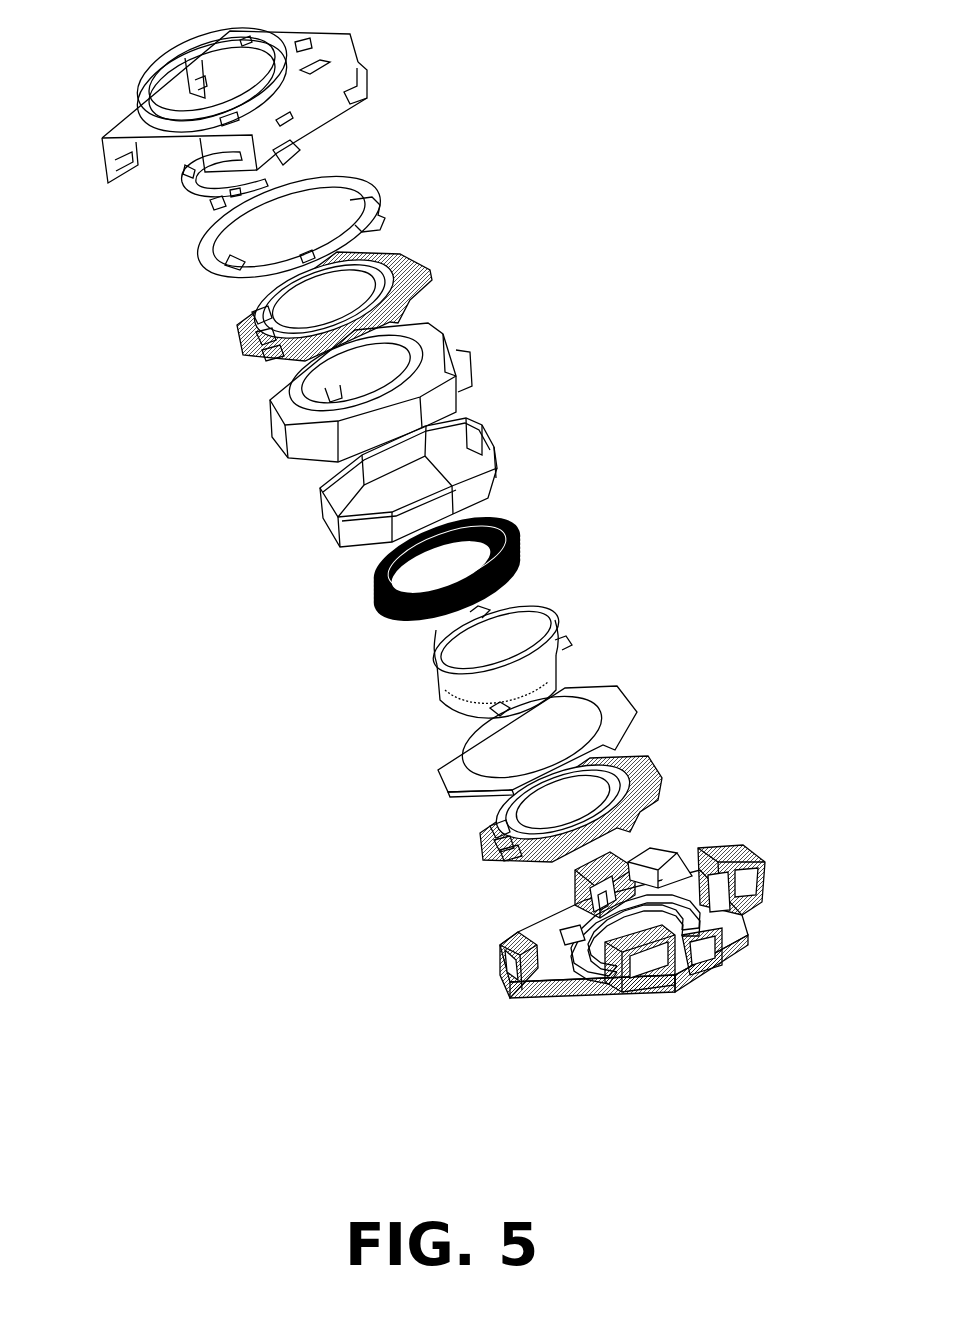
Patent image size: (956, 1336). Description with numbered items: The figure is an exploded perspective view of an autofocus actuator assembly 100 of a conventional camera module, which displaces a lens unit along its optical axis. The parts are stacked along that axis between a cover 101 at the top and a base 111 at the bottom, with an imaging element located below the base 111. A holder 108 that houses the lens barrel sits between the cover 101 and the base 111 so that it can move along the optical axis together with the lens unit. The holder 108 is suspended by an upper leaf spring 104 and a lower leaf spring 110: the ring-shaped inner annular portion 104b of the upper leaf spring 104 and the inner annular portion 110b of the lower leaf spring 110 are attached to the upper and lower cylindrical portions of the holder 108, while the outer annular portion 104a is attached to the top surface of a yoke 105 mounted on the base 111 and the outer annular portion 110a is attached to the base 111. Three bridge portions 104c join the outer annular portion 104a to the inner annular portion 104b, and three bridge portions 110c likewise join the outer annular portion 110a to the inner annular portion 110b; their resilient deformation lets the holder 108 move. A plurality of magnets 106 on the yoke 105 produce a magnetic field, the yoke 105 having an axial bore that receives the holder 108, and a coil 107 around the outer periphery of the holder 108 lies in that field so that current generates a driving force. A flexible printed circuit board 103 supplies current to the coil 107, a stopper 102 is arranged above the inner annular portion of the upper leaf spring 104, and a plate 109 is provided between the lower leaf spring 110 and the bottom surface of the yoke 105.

The autofocus actuator assembly 100 is at (595, 184).
The cover 101 is at (355, 55).
The stopper 102 is at (186, 200).
The flexible printed circuit board 103 is at (374, 190).
The upper leaf spring 104 is at (414, 263).
The outer annular portion 104a is at (256, 362).
The inner annular portion 104b is at (242, 318).
The bridge portions 104c is at (247, 340).
The yoke 105 is at (458, 350).
The magnets 106 is at (490, 447).
The coil 107 is at (522, 538).
The holder 108 is at (568, 637).
The plate 109 is at (636, 705).
The lower leaf spring 110 is at (663, 778).
The outer annular portion 110a is at (500, 856).
The inner annular portion 110b is at (482, 834).
The bridge portions 110c is at (479, 848).
The base 111 is at (765, 873).